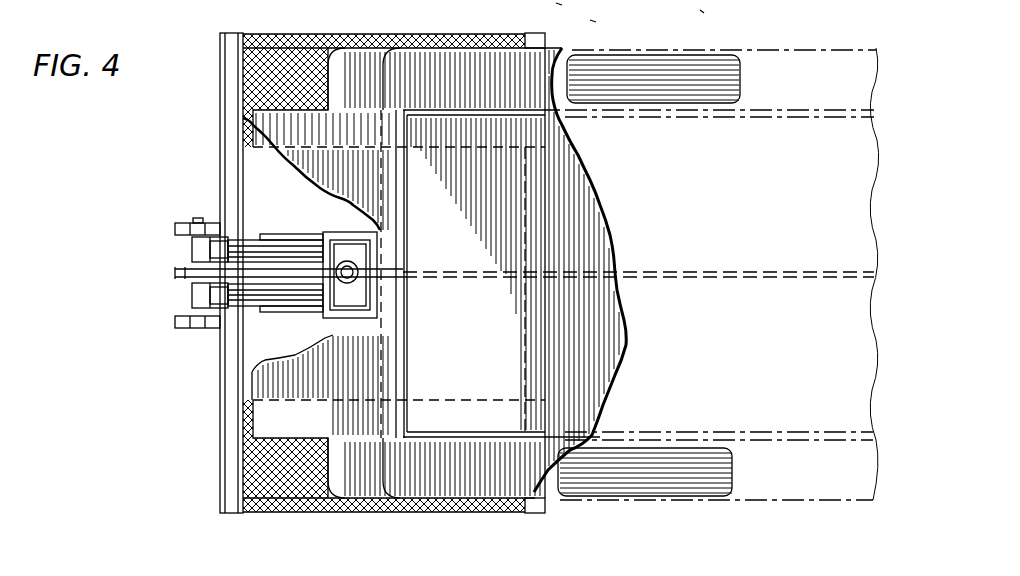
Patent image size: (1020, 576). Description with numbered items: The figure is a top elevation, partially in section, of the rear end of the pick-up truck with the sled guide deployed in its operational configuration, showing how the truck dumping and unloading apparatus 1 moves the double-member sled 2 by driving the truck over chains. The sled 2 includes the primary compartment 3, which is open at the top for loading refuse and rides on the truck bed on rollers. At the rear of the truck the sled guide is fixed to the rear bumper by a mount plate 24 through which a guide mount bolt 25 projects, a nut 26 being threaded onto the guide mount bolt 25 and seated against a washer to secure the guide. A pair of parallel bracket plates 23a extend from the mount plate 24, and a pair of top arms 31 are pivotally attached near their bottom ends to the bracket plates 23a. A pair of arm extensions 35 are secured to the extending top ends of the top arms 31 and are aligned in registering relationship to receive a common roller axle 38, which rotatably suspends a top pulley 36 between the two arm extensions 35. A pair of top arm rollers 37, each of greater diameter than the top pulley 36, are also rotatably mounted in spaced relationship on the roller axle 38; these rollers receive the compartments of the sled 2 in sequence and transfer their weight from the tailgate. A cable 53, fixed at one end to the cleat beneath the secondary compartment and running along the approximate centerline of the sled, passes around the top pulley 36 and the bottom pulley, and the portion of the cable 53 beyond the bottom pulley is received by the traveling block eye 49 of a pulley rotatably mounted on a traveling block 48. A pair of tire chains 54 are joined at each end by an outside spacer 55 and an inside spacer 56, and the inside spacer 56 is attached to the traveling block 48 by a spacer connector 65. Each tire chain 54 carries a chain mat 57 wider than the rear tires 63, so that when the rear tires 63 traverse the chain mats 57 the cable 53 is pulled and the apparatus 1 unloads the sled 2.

The truck dumping and unloading apparatus 1 is at (190, 160).
The double-member sled 2 is at (594, 160).
The primary compartment 3 is at (256, 420).
The bracket plates 23a is at (263, 234).
The mount plate 24 is at (372, 242).
The guide mount bolt 25 is at (359, 265).
The nut 26 is at (366, 326).
The top arms 31 is at (251, 230).
The arm extensions 35 is at (190, 244).
The top pulley 36 is at (173, 271).
The top arm rollers 37 is at (178, 230).
The roller axle 38 is at (198, 221).
The traveling block 48 is at (558, 3).
The traveling block eye 49 is at (592, 11).
The cable 53 is at (680, 270).
The tire chains 54 is at (299, 22).
The outside spacer 55 is at (546, 38).
The inside spacer 56 is at (243, 30).
The chain mat 57 is at (350, 34).
The rear tires 63 is at (680, 62).
The spacer connector 65 is at (700, 10).